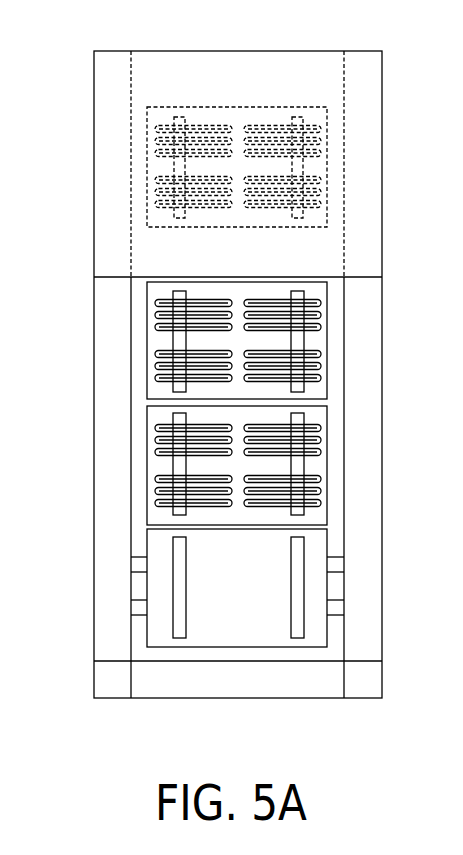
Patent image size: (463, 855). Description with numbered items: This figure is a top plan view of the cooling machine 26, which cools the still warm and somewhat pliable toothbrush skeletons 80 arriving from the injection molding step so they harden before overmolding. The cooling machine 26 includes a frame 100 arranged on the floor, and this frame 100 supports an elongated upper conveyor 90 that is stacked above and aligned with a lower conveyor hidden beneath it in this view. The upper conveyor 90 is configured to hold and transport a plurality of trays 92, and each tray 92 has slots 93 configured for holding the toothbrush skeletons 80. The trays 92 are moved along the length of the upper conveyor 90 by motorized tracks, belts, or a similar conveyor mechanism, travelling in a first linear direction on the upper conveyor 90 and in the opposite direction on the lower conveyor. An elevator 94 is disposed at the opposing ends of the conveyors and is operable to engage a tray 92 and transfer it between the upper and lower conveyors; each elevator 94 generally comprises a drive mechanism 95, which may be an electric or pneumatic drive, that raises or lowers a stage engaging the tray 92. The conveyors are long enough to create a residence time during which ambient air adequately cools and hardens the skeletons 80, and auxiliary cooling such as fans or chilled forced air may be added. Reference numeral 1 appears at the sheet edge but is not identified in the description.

The cooling machine 26 is at (78, 101).
The frame 100 is at (382, 222).
The upper conveyor 90 is at (344, 350).
The toothbrush skeletons 80 is at (162, 302).
The slots 93 is at (172, 421).
The trays 92 is at (147, 473).
The elevator 94 is at (455, 465).
The element 1 is at (459, 525).
The drive mechanism 95 is at (455, 596).